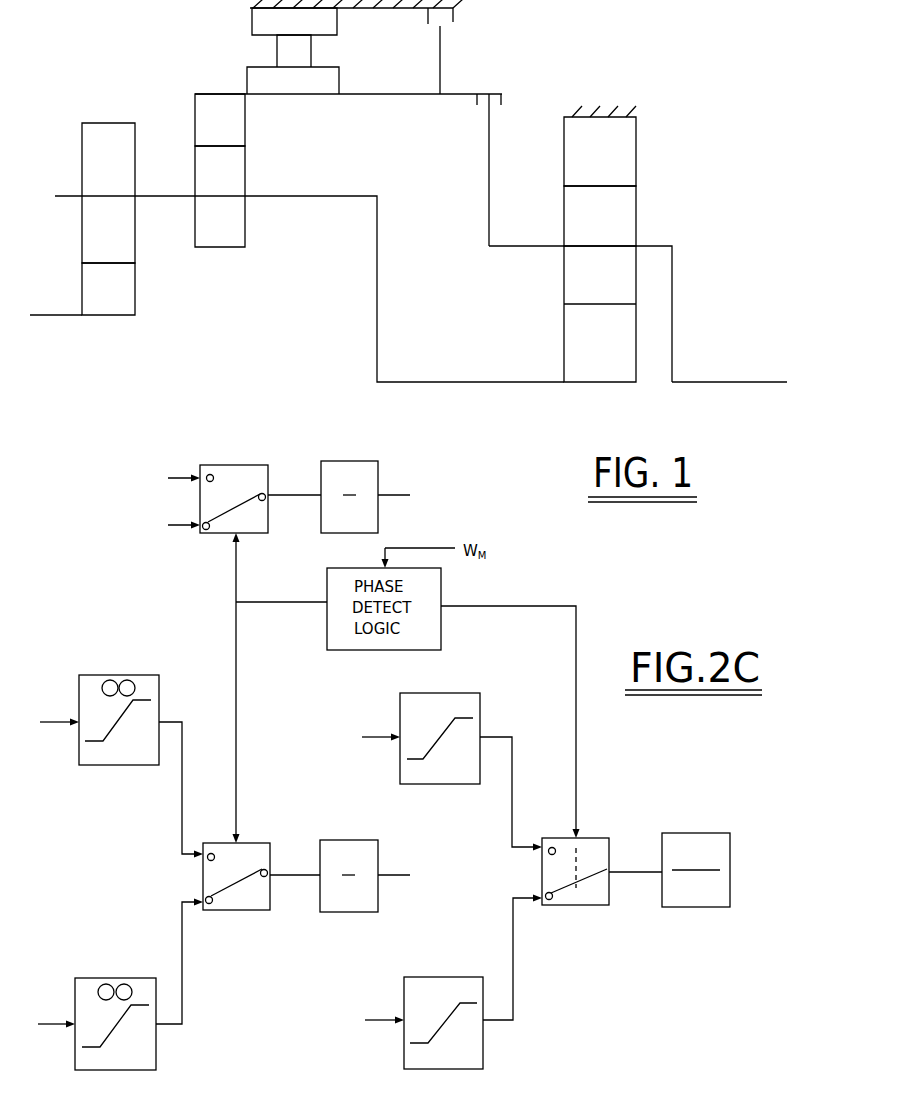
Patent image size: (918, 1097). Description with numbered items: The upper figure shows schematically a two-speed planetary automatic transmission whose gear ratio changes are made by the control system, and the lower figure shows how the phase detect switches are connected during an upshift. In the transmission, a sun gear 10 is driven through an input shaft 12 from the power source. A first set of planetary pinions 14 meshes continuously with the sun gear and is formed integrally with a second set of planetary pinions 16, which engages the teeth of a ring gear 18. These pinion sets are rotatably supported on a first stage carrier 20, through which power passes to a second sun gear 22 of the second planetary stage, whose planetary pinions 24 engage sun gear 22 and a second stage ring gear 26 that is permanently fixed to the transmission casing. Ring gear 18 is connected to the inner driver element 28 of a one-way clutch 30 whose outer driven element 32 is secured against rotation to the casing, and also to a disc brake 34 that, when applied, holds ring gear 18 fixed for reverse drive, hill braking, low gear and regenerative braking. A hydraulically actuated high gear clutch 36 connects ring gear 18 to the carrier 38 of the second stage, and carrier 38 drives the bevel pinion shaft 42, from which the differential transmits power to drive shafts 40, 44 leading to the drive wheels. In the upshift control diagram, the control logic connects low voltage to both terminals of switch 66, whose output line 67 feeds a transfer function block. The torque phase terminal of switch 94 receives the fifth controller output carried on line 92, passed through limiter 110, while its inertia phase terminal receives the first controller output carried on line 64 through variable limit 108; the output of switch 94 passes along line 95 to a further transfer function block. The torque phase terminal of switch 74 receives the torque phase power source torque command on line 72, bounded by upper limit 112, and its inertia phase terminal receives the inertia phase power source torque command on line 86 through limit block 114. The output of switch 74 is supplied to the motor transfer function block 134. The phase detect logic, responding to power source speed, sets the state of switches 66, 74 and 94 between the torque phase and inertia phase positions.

In FIG. 1, the sun gear 10 is at (135, 305).
In FIG. 1, the input shaft 12 is at (60, 318).
In FIG. 1, the first set of planetary pinions 14 is at (110, 123).
In FIG. 1, the second set of planetary pinions 16 is at (245, 232).
In FIG. 1, the ring gear 18 is at (200, 94).
In FIG. 1, the first stage carrier 20 is at (268, 196).
In FIG. 1, the second sun gear 22 is at (578, 384).
In FIG. 1, the planetary pinions 24 is at (637, 218).
In FIG. 1, the second stage ring gear 26 is at (637, 152).
In FIG. 1, the inner driver element 28 is at (339, 90).
In FIG. 1, the one-way clutch 30 is at (190, 47).
In FIG. 1, the outer driven element 32 is at (257, 37).
In FIG. 1, the disc brake 34 is at (428, 18).
In FIG. 1, the high gear clutch 36 is at (493, 94).
In FIG. 1, the carrier of the second planetary stage 38 is at (522, 247).
In FIG. 1, the drive shaft 40 is at (713, 391).
In FIG. 1, the bevel pinion shaft 42 is at (675, 306).
In FIG. 1, the drive shaft 44 is at (740, 384).
In FIG. 2C, the line 64 is at (50, 720).
In FIG. 2C, the phase detect controlled switch 66 is at (256, 465).
In FIG. 2C, the first clutch pressure signal Pc1 / filter 67 is at (288, 492).
In FIG. 2C, the line 72 is at (374, 735).
In FIG. 2C, the second phase detect controlled switch 74 is at (586, 908).
In FIG. 2C, the line 86 is at (372, 1018).
In FIG. 2C, the line 92 is at (46, 1022).
In FIG. 2C, the phase detect switch 94 is at (250, 843).
In FIG. 2C, the second clutch pressure signal Pc2 / filter 95 is at (290, 880).
In FIG. 2C, the variable limit 108 is at (126, 766).
In FIG. 2C, the limiter 110 is at (160, 1060).
In FIG. 2C, the upper limit 112 is at (400, 748).
In FIG. 2C, the upper limit function block 114 is at (400, 1038).
In FIG. 2C, the motor transfer function block 134 is at (707, 908).